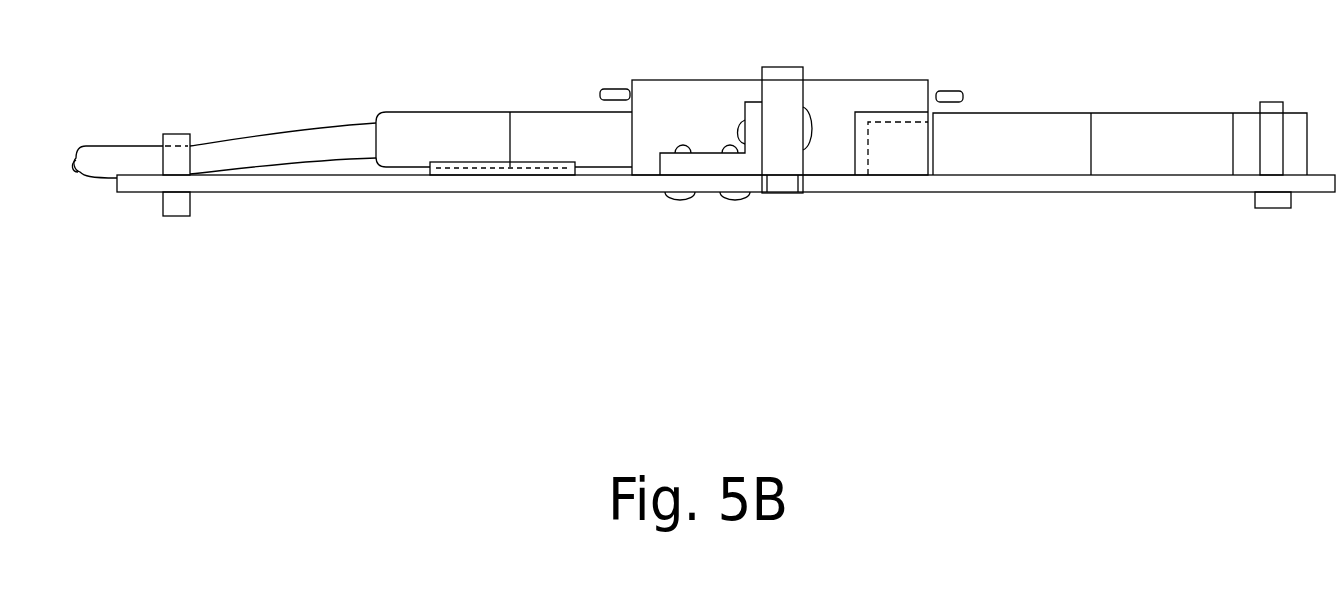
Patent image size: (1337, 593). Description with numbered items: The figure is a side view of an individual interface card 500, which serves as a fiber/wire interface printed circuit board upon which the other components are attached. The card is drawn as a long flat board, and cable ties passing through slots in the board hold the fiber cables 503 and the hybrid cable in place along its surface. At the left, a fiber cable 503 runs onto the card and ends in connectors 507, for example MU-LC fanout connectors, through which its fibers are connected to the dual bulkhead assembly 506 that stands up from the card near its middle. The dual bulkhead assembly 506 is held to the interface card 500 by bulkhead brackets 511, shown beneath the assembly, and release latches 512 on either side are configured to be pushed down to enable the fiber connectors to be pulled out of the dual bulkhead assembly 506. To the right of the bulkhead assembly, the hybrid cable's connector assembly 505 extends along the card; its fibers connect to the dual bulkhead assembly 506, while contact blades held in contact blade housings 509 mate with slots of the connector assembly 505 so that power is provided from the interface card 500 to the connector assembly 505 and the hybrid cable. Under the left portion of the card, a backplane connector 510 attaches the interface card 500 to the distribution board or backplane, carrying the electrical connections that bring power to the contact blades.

The interface card 500 is at (280, 278).
The fiber cables 503 is at (260, 136).
The connector assembly 505 is at (1103, 120).
The dual bulkhead assembly 506 is at (777, 69).
The connectors 507 is at (530, 115).
The contact blade housings 509 is at (888, 168).
The backplane connector 510 is at (470, 171).
The bulkhead brackets 511 is at (706, 154).
The release latches 512 is at (612, 89).